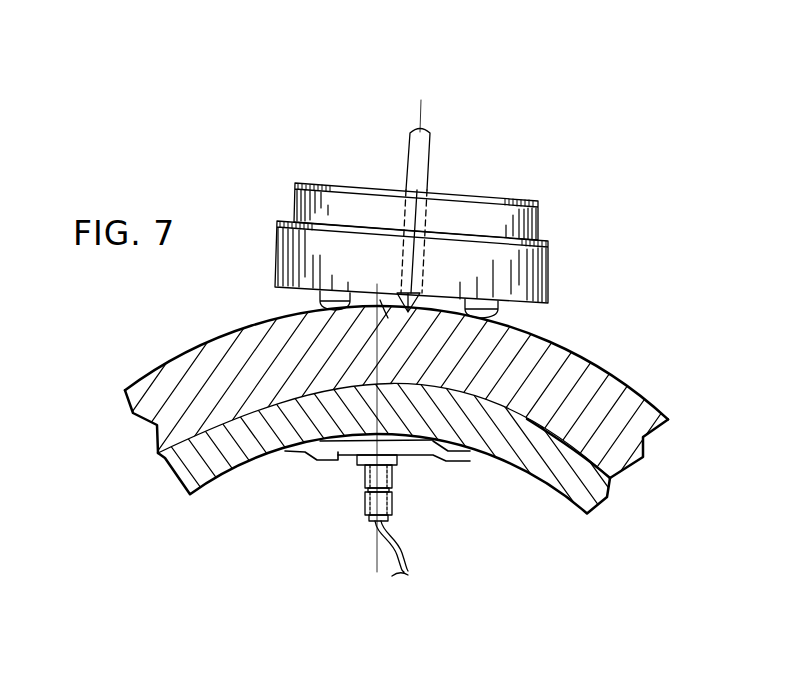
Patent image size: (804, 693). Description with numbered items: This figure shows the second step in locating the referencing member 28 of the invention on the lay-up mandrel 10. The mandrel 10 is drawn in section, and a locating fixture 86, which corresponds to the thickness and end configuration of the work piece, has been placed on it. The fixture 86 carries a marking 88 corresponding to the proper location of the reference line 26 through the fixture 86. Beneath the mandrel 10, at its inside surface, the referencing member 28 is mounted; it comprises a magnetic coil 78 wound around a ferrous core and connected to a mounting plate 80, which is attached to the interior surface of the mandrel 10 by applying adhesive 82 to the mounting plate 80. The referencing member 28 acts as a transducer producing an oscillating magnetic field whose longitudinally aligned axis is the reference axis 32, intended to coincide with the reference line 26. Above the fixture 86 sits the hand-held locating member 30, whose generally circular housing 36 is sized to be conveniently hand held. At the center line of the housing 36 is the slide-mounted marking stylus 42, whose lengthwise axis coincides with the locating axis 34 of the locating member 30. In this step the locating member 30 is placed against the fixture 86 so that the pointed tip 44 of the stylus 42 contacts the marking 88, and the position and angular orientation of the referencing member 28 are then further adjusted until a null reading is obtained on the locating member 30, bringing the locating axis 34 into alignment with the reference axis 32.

The lay-up mandrel 10 is at (563, 488).
The reference line 26 is at (375, 336).
The referencing member 28 is at (405, 487).
The locating member 30 is at (452, 220).
The reference axis 32 is at (372, 358).
The locating axis 34 is at (520, 340).
The housing 36 is at (552, 278).
The marking stylus 42 is at (430, 163).
The pointed tip 44 is at (428, 298).
The coil 78 is at (393, 503).
The mounting plate 80 is at (350, 456).
The adhesive 82 is at (310, 458).
The locating fixture 86 is at (618, 388).
The marking 88 is at (384, 313).